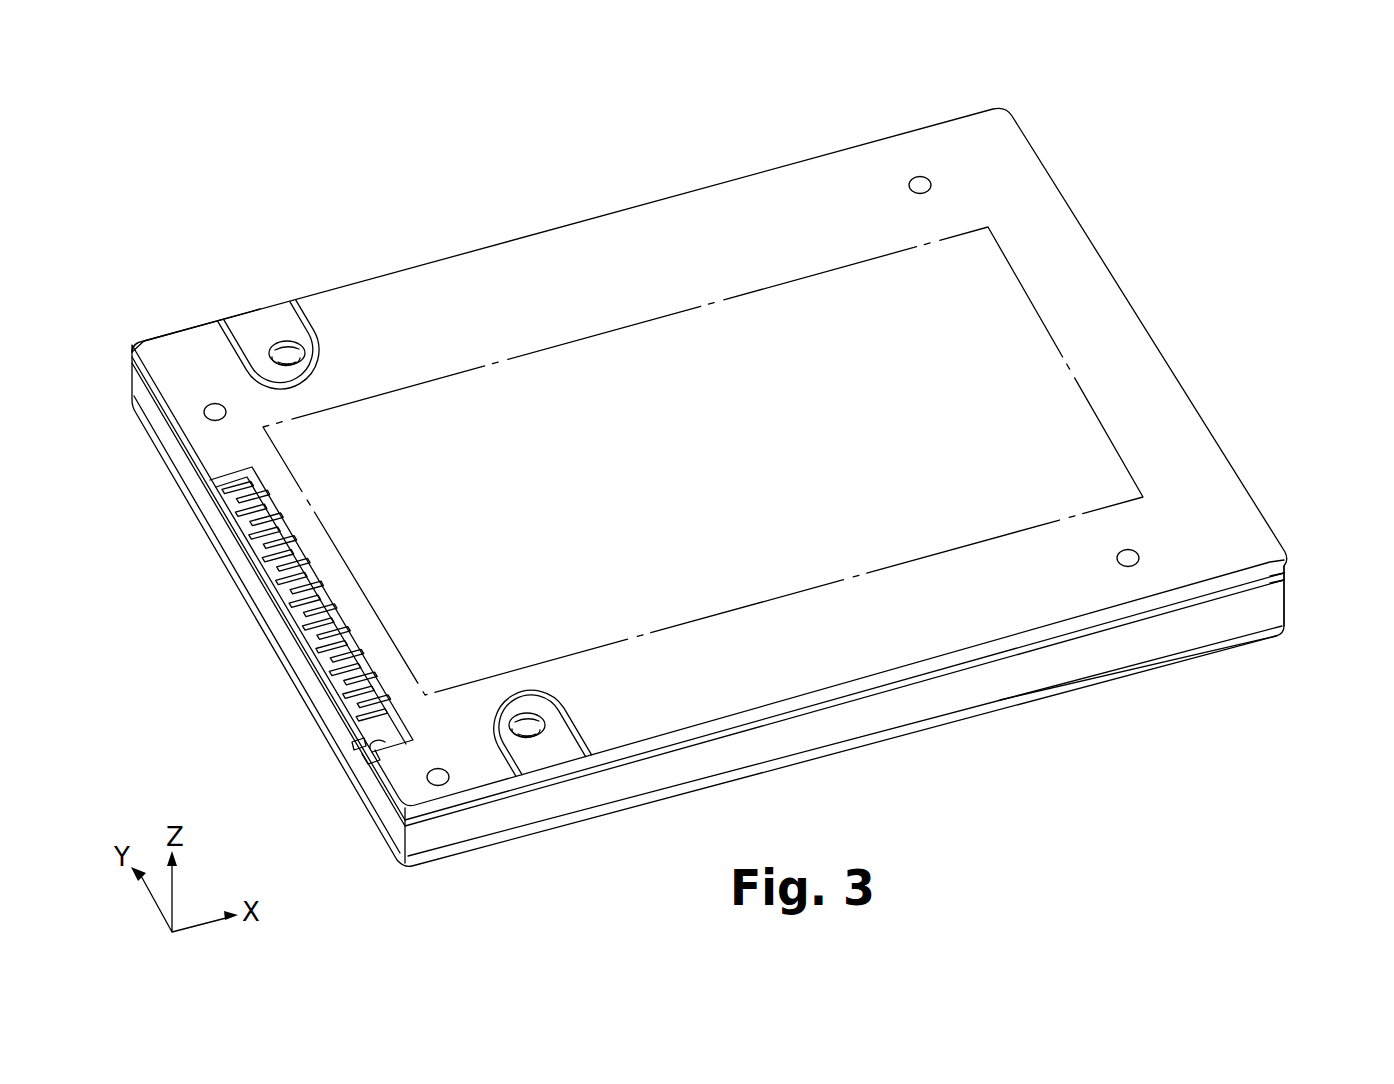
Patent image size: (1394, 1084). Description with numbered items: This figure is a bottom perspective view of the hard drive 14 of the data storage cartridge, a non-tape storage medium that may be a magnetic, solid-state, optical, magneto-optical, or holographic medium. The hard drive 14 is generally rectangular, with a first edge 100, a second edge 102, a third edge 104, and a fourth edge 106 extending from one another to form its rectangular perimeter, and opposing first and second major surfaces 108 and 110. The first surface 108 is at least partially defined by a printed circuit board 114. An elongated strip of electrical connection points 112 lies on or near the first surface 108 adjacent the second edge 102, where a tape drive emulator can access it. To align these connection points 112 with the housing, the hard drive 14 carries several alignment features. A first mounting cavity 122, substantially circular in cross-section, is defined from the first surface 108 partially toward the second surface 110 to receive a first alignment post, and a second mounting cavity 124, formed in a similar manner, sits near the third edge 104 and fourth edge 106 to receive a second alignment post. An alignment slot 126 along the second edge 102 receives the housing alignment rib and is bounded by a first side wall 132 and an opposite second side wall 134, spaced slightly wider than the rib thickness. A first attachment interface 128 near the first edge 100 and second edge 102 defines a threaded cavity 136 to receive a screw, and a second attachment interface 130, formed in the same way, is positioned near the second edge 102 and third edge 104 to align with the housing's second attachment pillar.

The hard drive 14 is at (1178, 176).
The first edge 100 is at (165, 352).
The second edge 102 is at (165, 425).
The third edge 104 is at (440, 832).
The fourth edge 106 is at (1282, 596).
The first major surface 108 is at (152, 342).
The second major surface 110 is at (1150, 667).
The electrical connection point 112 is at (245, 548).
The printed circuit board 114 is at (1280, 578).
The first mounting cavity 122 is at (920, 176).
The second mounting cavity 124 is at (1140, 558).
The alignment slot 126 is at (345, 756).
The first attachment interface 128 is at (255, 332).
The second attachment interface 130 is at (530, 765).
The first side wall 132 is at (355, 742).
The second side wall 134 is at (372, 755).
The threaded cavity 136 is at (287, 341).